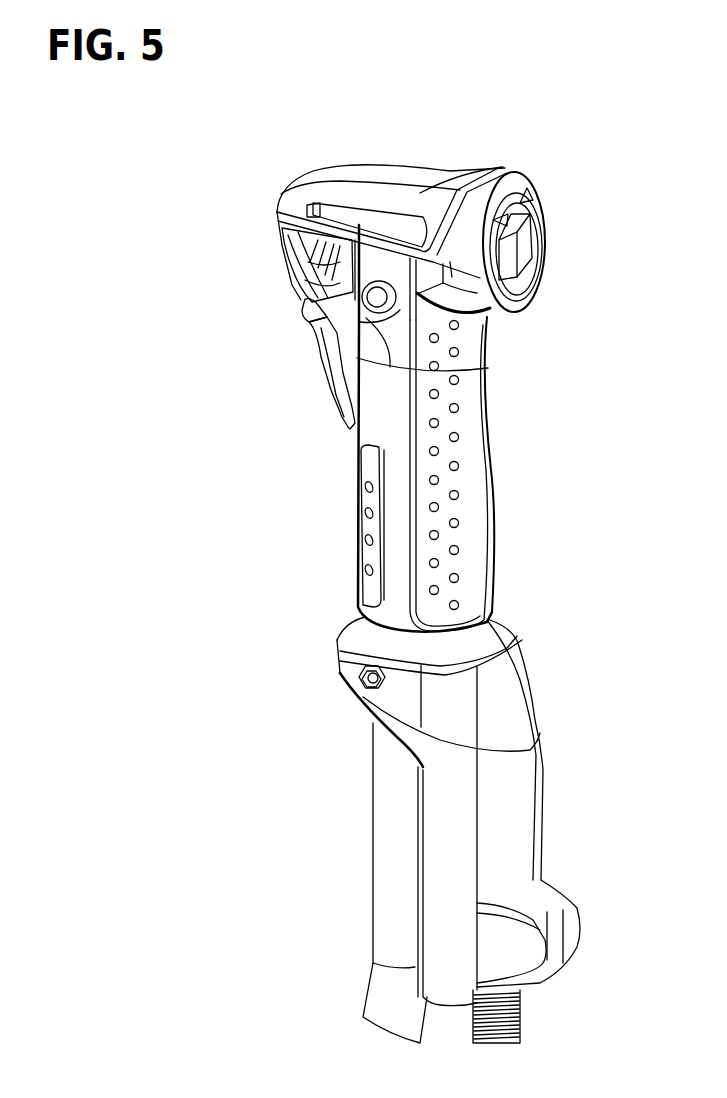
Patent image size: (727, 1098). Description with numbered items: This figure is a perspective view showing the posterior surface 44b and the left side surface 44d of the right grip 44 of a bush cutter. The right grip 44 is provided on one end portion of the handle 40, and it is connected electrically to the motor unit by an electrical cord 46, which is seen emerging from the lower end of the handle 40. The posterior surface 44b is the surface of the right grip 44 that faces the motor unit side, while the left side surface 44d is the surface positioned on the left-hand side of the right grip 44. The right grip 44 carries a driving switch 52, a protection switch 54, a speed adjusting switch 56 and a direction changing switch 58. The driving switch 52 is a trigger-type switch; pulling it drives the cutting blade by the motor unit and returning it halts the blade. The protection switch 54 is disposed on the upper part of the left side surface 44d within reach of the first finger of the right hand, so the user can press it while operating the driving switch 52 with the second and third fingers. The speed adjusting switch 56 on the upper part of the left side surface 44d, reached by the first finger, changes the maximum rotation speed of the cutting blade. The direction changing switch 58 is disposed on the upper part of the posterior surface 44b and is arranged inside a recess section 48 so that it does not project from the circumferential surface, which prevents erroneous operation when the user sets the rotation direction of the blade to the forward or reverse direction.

The handle 40 is at (373, 848).
The right grip 44 is at (427, 474).
The posterior surface 44b is at (497, 497).
The left side surface 44d is at (389, 464).
The electrical cord 46 is at (520, 1010).
The recess section 48 is at (537, 233).
The driving switch 52 is at (330, 385).
The protection switch 54 is at (304, 318).
The speed adjusting switch 56 is at (298, 228).
The direction changing switch 58 is at (520, 258).